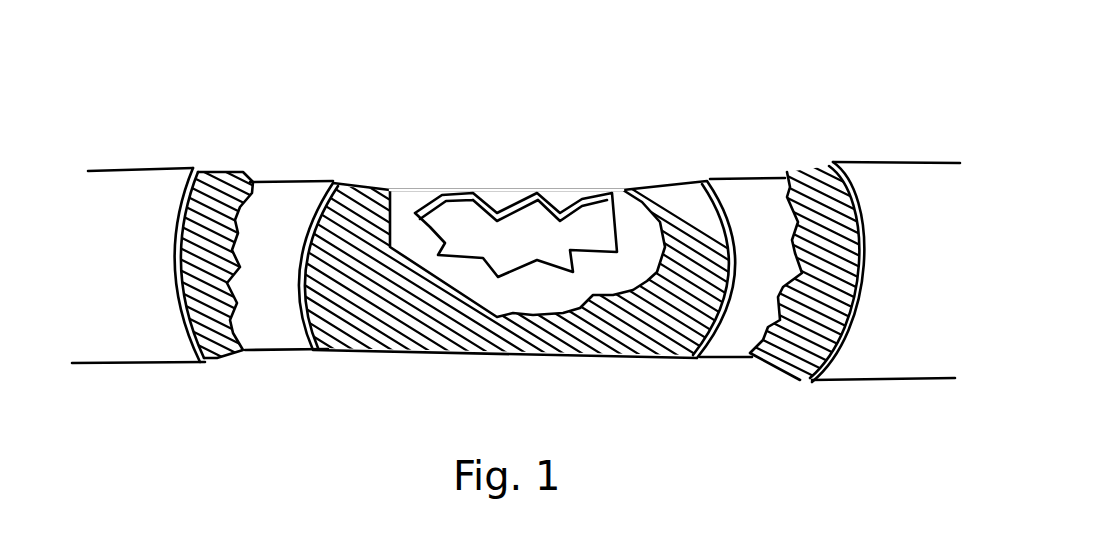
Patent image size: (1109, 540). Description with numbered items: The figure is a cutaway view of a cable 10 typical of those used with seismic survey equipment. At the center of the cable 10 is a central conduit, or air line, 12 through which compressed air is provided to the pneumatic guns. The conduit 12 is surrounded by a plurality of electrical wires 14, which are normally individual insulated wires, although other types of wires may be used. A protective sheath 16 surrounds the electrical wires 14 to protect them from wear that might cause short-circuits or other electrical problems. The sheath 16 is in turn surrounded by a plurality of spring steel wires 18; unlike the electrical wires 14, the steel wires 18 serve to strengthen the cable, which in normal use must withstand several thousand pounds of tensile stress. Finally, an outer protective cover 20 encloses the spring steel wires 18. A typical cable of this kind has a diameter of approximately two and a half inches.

The cable 10 is at (615, 72).
The central conduit 12 is at (421, 190).
The electrical wires 14 is at (380, 343).
The protective sheath 16 is at (305, 180).
The spring steel wires 18 is at (225, 357).
The outer protective cover 20 is at (167, 165).